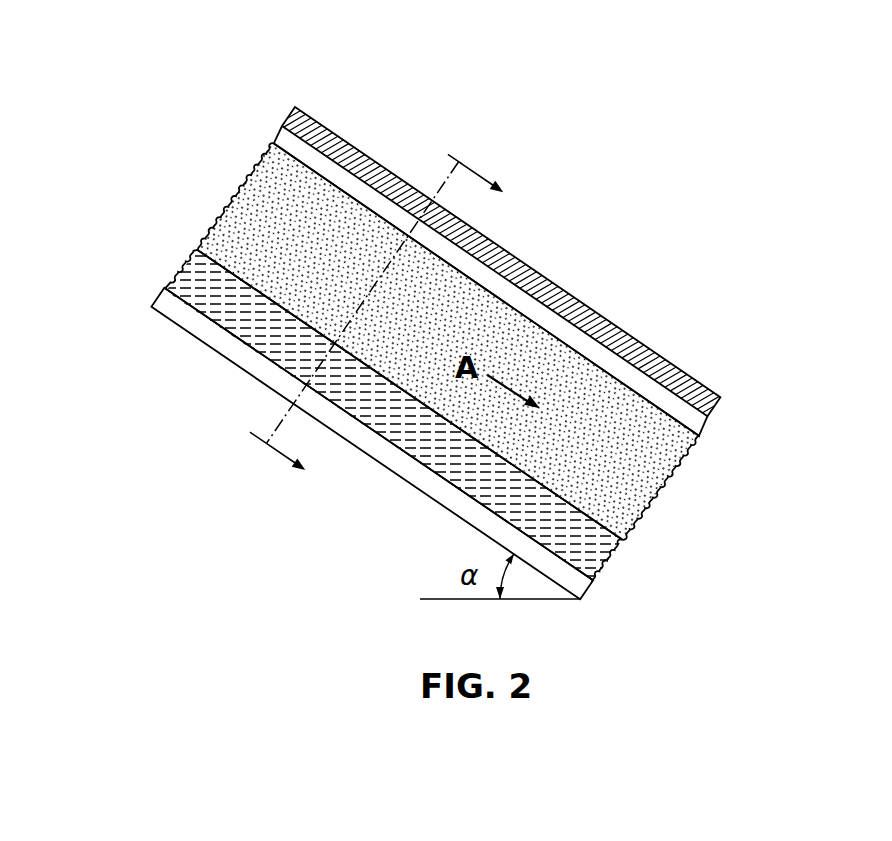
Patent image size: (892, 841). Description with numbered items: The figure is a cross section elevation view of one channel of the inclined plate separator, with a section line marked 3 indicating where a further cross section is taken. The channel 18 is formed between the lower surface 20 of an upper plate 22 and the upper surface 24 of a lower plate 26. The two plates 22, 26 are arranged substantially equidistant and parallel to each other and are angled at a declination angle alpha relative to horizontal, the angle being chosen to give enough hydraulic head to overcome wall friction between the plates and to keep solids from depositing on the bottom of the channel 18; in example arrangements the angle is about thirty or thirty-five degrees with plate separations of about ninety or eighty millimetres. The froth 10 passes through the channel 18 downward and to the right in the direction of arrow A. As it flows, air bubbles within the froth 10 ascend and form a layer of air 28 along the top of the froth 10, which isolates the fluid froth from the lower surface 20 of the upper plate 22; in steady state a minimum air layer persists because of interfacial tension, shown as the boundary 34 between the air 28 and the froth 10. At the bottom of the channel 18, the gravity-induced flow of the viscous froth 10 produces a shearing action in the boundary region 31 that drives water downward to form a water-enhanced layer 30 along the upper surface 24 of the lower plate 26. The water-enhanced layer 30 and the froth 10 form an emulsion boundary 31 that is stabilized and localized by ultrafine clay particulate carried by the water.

The froth 10 is at (283, 210).
The channel 18 is at (205, 221).
The lower surface 20 is at (474, 266).
The upper plate 22 is at (543, 287).
The upper surface 24 is at (233, 342).
The lower plate 26 is at (208, 352).
The layer of air 28 is at (290, 147).
The water-enhanced layer 30 is at (194, 283).
The emulsion boundary 31 is at (573, 503).
The boundary 34 is at (656, 405).
The section line 3- 3 is at (387, 318).